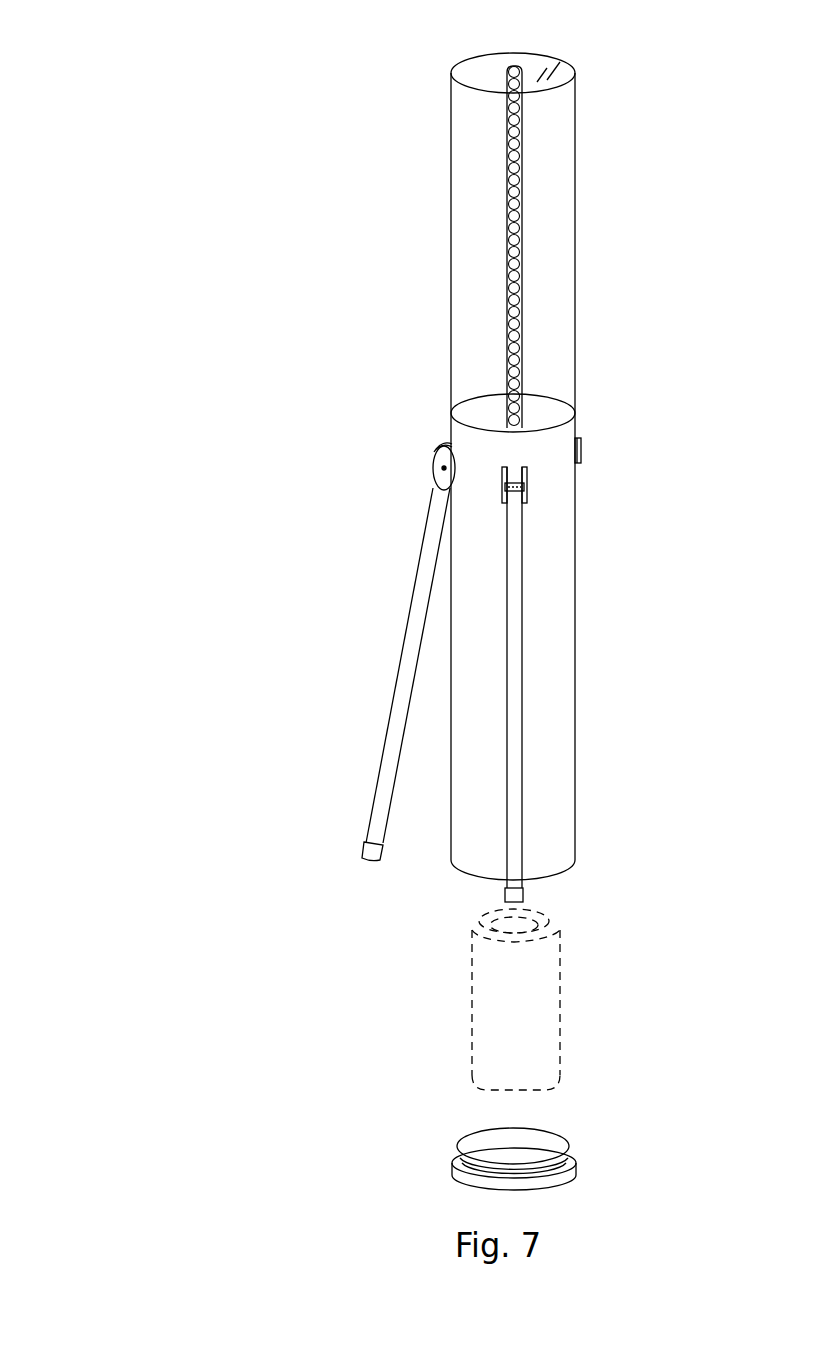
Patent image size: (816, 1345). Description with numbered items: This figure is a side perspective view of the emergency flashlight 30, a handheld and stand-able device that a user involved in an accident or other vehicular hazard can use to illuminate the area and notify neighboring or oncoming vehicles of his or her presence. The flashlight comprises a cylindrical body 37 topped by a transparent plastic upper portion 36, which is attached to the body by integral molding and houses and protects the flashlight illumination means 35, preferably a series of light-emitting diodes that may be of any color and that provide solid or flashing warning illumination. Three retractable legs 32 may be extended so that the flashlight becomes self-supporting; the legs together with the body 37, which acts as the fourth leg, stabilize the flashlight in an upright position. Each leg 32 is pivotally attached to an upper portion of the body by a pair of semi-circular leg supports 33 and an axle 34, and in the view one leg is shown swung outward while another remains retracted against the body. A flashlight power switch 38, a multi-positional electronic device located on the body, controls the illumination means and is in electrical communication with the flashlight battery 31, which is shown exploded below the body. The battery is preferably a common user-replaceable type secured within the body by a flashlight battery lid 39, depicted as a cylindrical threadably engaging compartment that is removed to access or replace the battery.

The emergency flashlight 30 is at (150, 112).
The flashlight battery 31 is at (540, 987).
The retractable legs 32 is at (393, 731).
The semi-circular leg supports 33 is at (441, 446).
The axle 34 is at (440, 466).
The flashlight illumination means 35 is at (511, 92).
The transparent plastic upper portion 36 is at (461, 123).
The cylindrical body 37 is at (548, 729).
The flashlight power switch 38 is at (582, 436).
The flashlight battery lid 39 is at (548, 1148).